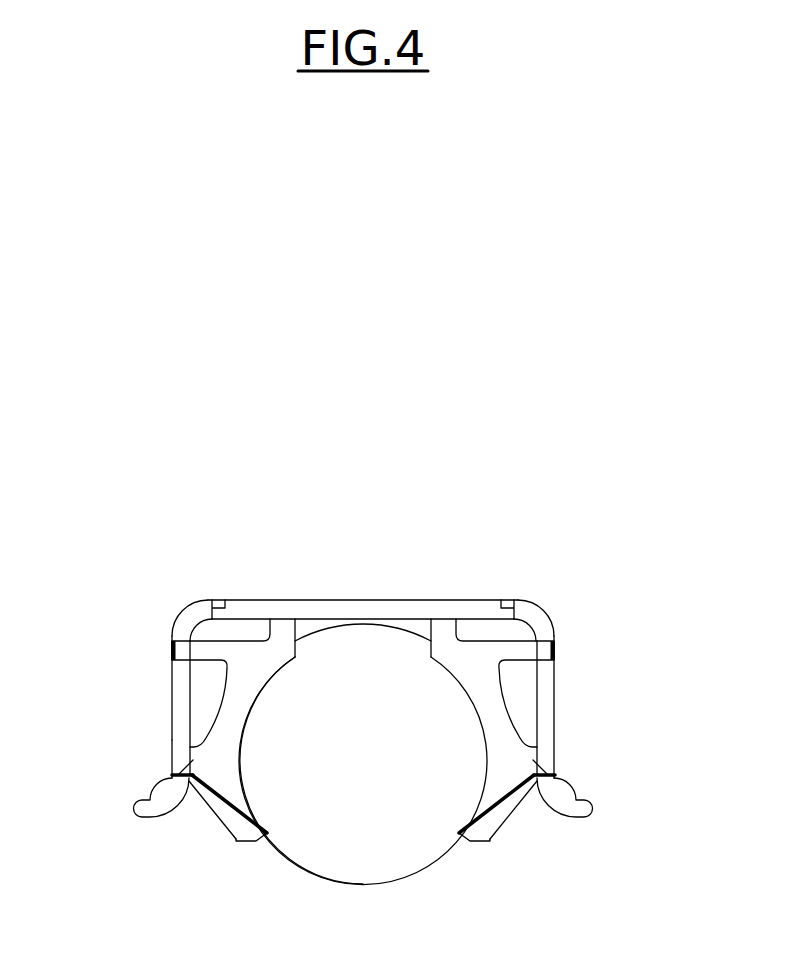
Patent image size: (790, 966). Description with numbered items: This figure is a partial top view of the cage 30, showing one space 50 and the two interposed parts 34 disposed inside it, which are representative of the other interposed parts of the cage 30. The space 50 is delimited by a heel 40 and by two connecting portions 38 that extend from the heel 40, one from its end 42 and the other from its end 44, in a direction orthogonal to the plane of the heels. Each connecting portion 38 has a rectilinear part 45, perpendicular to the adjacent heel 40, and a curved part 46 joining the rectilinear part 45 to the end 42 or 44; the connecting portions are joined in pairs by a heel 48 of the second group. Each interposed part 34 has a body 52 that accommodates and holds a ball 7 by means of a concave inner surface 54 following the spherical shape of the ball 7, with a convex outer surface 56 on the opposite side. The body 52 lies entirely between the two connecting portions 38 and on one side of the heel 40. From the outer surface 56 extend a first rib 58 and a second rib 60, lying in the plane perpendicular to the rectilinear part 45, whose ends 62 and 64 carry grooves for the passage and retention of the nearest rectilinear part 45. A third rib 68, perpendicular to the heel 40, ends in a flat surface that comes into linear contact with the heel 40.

The ball 7 is at (378, 872).
The cage 30 is at (563, 845).
The interposed part 34 is at (229, 845).
The connecting portion 38 is at (164, 692).
The heel 40 is at (385, 608).
The end of heel 42 is at (227, 607).
The end of heel 44 is at (500, 608).
The rectilinear part 45 is at (546, 683).
The curved part 46 is at (541, 622).
The heel 48 is at (126, 809).
The space 50 is at (227, 636).
The body 52 is at (235, 712).
The concave inner surface 54 is at (243, 782).
The convex outer surface 56 is at (212, 808).
The first rib 58 is at (173, 777).
The second rib 60 is at (202, 650).
The end of first rib 62 is at (173, 757).
The end of second rib 64 is at (172, 655).
The third rib 68 is at (283, 622).